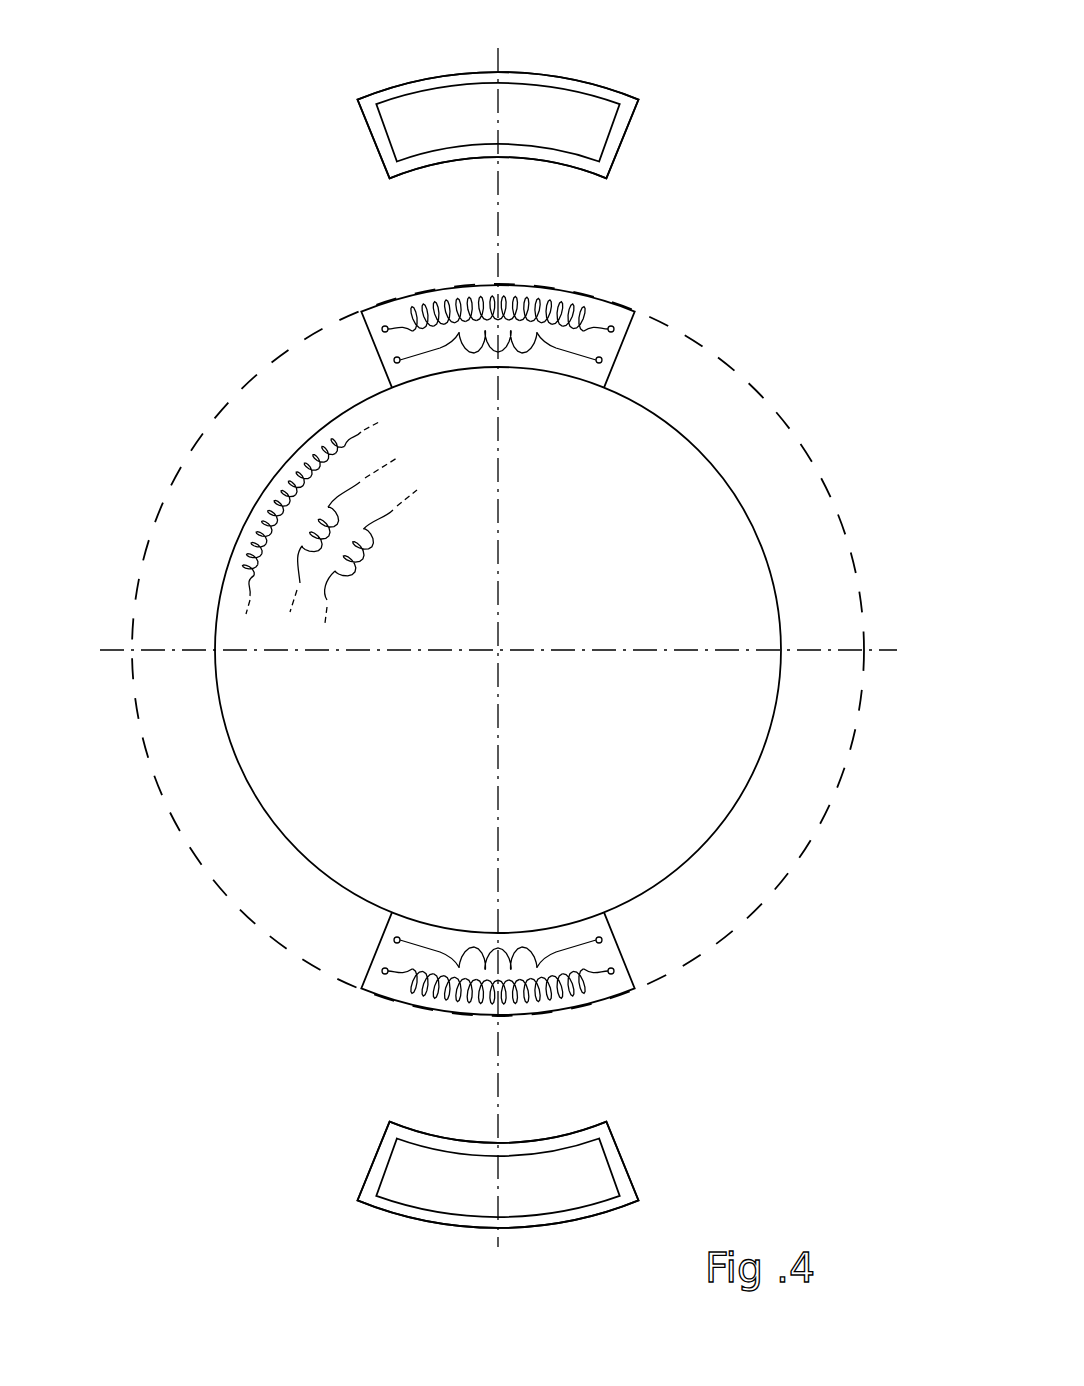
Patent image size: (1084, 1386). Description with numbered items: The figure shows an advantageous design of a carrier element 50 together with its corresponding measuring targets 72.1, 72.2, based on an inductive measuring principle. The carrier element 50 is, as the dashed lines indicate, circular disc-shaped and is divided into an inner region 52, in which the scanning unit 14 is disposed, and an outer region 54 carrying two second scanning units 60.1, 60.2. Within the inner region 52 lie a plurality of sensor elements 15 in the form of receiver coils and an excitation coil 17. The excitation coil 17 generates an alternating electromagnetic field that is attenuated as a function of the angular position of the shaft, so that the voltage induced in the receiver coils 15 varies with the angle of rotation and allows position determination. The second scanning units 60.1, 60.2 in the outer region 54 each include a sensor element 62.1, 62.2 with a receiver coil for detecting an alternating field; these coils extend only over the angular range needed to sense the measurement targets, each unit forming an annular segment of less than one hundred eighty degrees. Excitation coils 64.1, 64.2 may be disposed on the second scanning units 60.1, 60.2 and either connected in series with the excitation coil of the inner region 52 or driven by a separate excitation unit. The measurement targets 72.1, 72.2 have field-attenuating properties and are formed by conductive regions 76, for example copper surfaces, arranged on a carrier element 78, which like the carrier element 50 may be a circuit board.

The scanning unit 14 is at (778, 597).
The sensor elements 15 is at (330, 598).
The excitation coil 17 is at (278, 510).
The carrier element 50 is at (512, 650).
The inner region 52 is at (498, 650).
The outer region 54 is at (782, 430).
The second scanning unit 60.1 is at (423, 292).
The second scanning unit 60.2 is at (582, 1010).
The sensor element 62.1 is at (523, 348).
The sensor element 62.2 is at (522, 943).
The excitation coil 64.1 is at (562, 304).
The excitation coil 64.2 is at (447, 998).
The measurement target 72.1 is at (399, 86).
The measurement target 72.2 is at (562, 1197).
The conductive regions 76 is at (578, 107).
The carrier element 78 is at (498, 650).